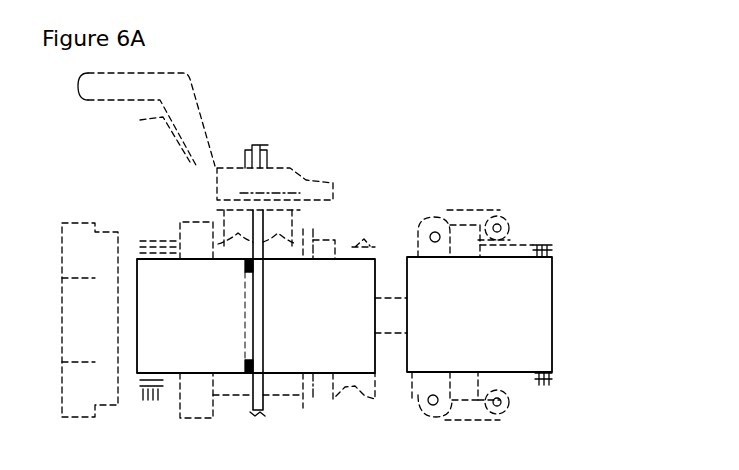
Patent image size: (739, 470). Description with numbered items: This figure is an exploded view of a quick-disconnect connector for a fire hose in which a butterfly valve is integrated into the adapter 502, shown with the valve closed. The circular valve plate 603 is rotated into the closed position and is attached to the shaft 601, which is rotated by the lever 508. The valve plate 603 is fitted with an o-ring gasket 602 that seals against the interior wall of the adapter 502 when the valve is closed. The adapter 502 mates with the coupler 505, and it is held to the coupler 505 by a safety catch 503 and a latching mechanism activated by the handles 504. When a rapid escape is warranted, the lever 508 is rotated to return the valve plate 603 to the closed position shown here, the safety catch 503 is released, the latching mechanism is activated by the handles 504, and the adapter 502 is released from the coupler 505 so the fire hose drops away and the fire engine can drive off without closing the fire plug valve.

The adapter 502 is at (337, 236).
The safety catch 503 is at (391, 336).
The handles 504 is at (478, 200).
The coupler 505 is at (518, 232).
The lever 508 is at (197, 95).
The shaft 601 is at (270, 321).
The o-ring gasket 602 is at (230, 268).
The circular valve plate 603 is at (230, 349).